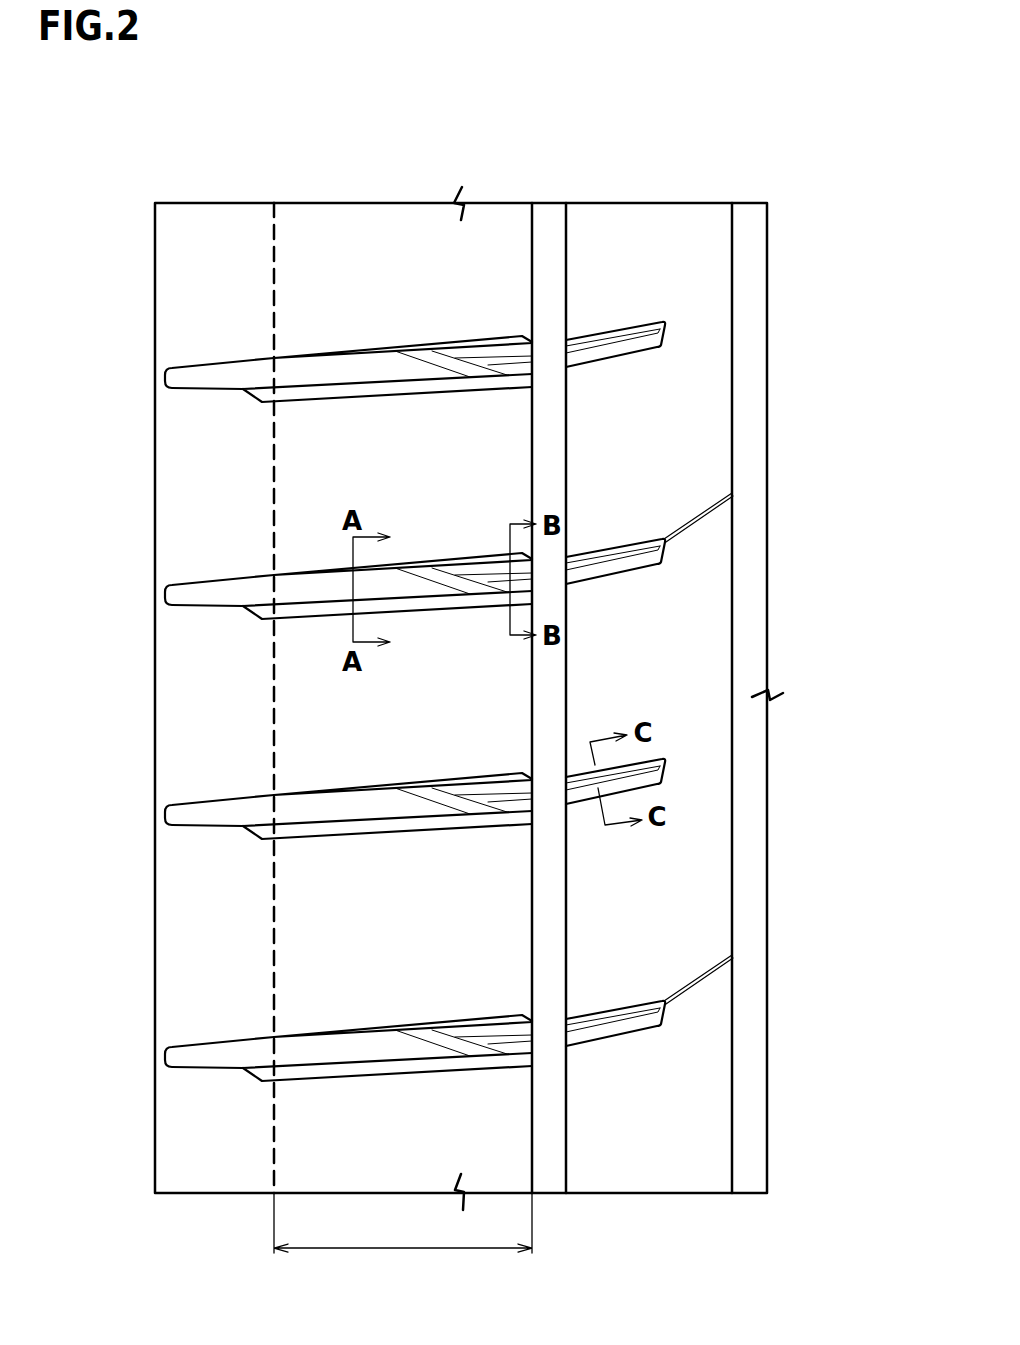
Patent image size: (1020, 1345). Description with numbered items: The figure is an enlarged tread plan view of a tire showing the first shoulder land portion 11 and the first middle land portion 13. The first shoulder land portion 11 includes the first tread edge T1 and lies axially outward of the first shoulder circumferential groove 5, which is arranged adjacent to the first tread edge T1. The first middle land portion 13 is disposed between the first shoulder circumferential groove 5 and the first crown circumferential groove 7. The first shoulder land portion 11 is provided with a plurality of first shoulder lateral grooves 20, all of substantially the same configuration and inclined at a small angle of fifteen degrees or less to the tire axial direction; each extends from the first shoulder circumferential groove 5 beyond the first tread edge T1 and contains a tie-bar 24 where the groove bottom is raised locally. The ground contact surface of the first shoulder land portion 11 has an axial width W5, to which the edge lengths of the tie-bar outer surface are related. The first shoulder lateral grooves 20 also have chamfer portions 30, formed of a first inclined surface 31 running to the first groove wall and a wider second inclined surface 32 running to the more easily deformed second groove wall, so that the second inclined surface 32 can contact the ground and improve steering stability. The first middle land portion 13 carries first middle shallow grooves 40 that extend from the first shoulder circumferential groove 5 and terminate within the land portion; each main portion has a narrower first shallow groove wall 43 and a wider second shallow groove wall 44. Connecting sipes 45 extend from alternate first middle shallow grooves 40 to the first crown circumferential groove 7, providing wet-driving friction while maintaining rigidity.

The first shoulder circumferential groove 5 is at (554, 241).
The first crown circumferential groove 7 is at (758, 241).
The first shoulder land portion 11 is at (393, 240).
The first middle land portion 13 is at (649, 241).
The first shoulder lateral groove 20 is at (295, 366).
The tie-bar 24 is at (513, 1022).
The chamfer portion 30 is at (77, 775).
The first inclined surface 31 is at (382, 566).
The second inclined surface 32 is at (373, 603).
The first middle shallow groove 40 is at (627, 352).
The first shallow groove wall 43 is at (580, 1018).
The second shallow groove wall 44 is at (605, 1030).
The connecting sipe 45 is at (707, 513).
The first tread edge T1 is at (273, 240).
The width of the ground contact surface of the first shoulder land portion W5 is at (403, 1238).